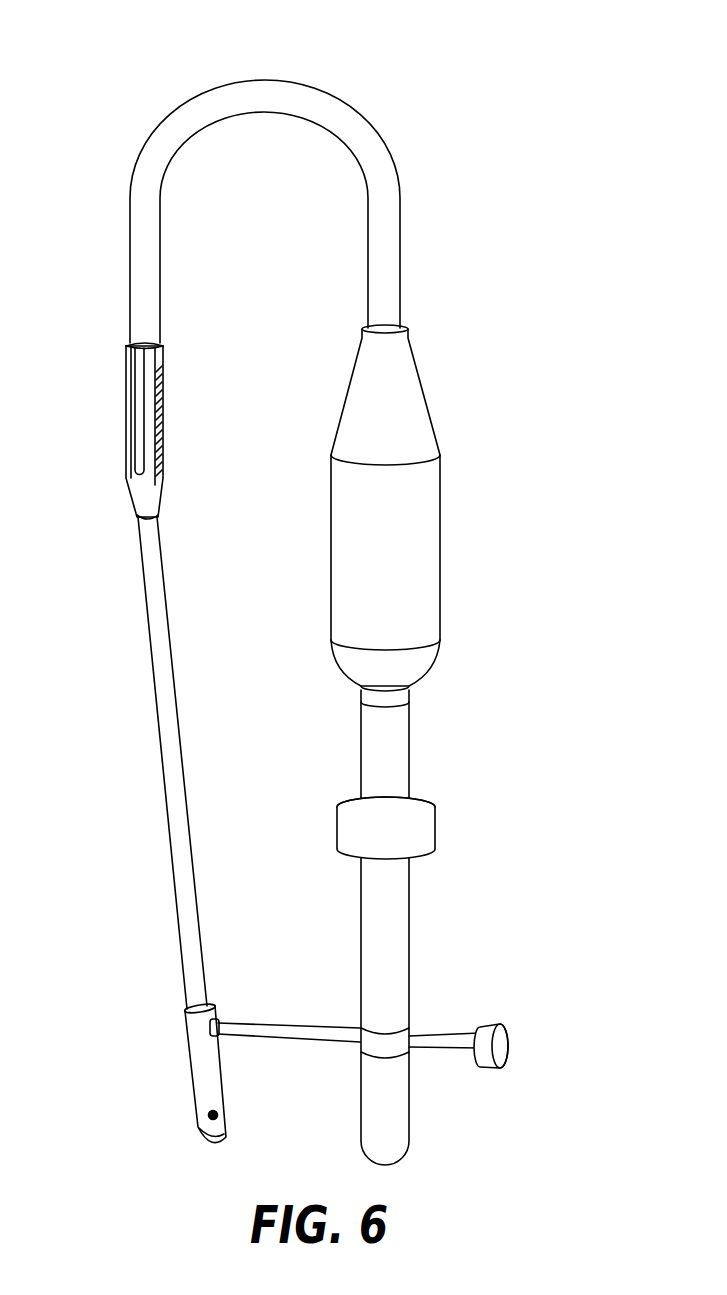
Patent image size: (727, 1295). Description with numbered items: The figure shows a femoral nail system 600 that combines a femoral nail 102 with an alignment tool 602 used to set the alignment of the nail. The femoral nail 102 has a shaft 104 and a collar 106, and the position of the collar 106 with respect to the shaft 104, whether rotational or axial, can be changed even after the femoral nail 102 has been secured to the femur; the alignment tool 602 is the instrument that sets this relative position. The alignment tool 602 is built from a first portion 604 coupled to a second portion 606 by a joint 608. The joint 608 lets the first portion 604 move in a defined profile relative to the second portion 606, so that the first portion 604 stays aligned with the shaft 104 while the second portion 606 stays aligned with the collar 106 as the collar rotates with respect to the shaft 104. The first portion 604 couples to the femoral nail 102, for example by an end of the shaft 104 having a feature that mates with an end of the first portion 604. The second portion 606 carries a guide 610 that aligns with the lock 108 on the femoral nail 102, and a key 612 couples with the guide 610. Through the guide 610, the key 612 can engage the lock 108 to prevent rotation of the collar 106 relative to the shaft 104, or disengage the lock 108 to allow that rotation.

The femoral nail system 600 is at (479, 65).
The alignment tool 602 is at (451, 371).
The first portion 604 is at (130, 256).
The second portion 606 is at (412, 1106).
The joint 608 is at (436, 826).
The guide 610 is at (393, 1023).
The key 612 is at (512, 1043).
The femoral nail 102 is at (101, 382).
The shaft 104 is at (140, 617).
The collar 106 is at (190, 1092).
The lock 108 is at (217, 1022).